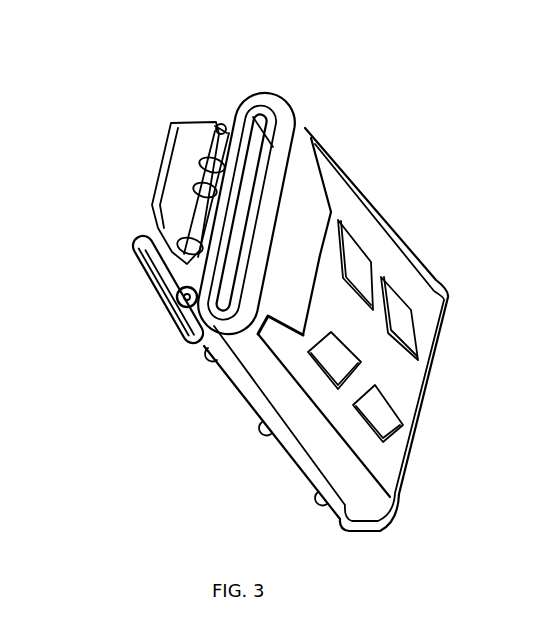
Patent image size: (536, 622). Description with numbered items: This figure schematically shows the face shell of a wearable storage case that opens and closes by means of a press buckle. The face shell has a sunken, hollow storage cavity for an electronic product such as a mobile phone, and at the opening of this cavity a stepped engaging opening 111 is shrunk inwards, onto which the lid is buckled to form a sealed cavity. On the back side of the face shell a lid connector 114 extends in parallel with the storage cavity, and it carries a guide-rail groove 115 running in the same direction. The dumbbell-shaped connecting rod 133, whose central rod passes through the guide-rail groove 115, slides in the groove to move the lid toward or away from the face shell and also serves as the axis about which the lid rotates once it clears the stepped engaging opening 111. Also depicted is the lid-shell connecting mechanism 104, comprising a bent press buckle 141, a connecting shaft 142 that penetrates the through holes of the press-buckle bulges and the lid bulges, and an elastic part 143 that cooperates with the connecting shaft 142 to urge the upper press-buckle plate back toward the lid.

The lid-shell connecting mechanism 104 is at (115, 33).
The stepped engaging opening 111 is at (255, 142).
The lid connector 114 is at (148, 287).
The guide-rail groove 115 is at (137, 265).
The dumbbell-shaped connecting rod 133 is at (175, 317).
The press buckle 141 is at (163, 147).
The connecting shaft 142 is at (219, 124).
The elastic part 143 is at (193, 163).